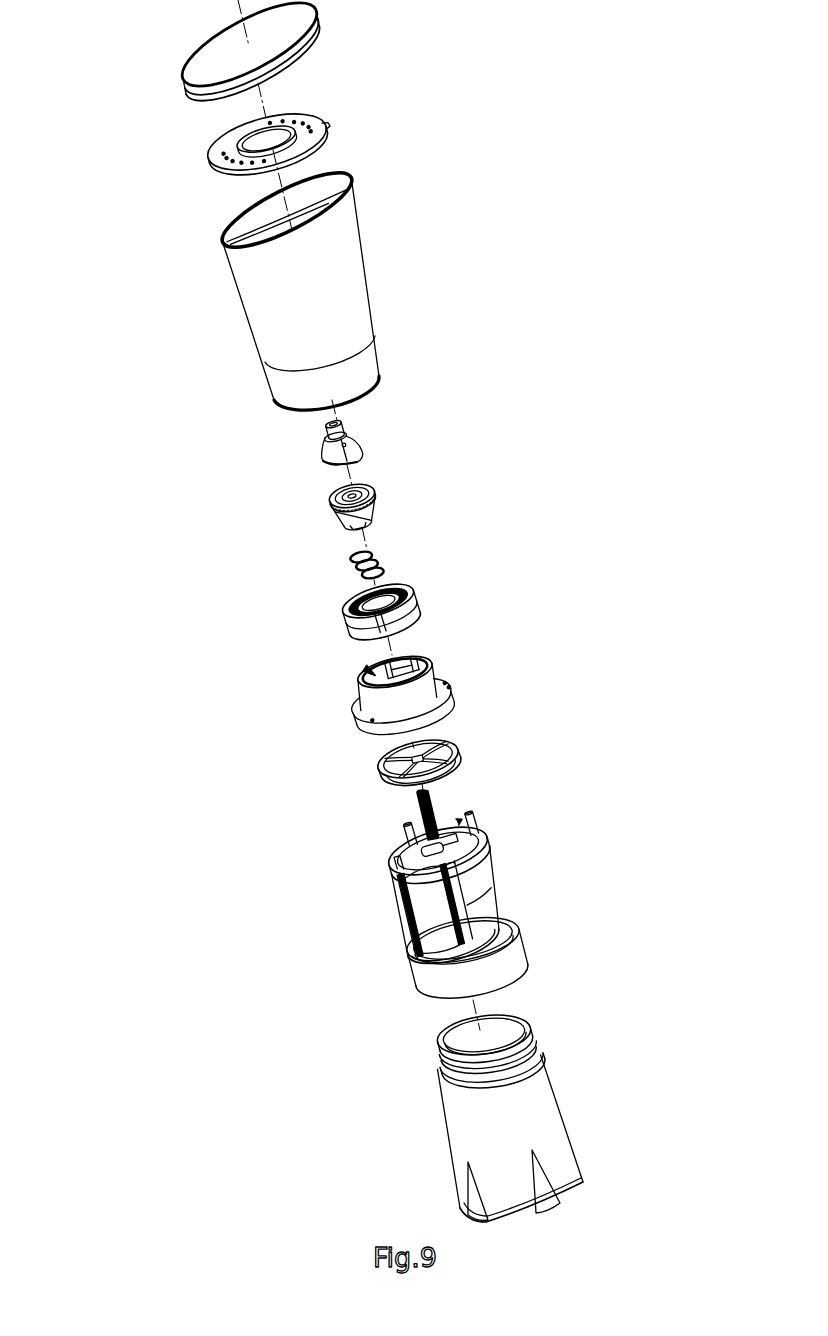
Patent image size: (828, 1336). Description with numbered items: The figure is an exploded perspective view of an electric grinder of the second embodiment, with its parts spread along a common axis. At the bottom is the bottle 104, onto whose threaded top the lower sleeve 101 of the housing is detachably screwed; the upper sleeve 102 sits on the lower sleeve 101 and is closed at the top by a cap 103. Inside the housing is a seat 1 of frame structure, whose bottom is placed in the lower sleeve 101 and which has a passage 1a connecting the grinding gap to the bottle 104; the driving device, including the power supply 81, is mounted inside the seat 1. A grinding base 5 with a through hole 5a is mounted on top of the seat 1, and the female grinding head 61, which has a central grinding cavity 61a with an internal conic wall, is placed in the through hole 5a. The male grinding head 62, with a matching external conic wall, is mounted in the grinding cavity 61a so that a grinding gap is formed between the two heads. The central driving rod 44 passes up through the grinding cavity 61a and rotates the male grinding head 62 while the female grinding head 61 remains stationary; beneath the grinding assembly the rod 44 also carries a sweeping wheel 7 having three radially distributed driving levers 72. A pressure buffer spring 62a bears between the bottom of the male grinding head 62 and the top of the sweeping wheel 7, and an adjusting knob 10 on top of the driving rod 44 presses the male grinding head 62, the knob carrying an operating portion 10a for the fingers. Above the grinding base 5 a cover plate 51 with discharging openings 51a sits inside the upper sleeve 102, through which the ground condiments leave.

The cap 103 is at (181, 73).
The cover plate 51 is at (277, 144).
The discharging openings 51a is at (225, 147).
The upper sleeve 102 is at (342, 298).
The adjusting knob 10 is at (349, 439).
The operating portion 10a is at (334, 437).
The male grinding head 62 is at (333, 502).
The pressure buffer spring 62a is at (382, 562).
The female grinding head 61 is at (393, 609).
The grinding cavity 61a is at (354, 597).
The grinding base 5 is at (411, 693).
The through hole 5a is at (365, 670).
The sweeping wheel 7 is at (423, 760).
The driving levers 72 is at (382, 768).
The central driving rod 44 is at (416, 828).
The seat 1 is at (451, 877).
The passage 1a is at (470, 828).
The power supply 81 is at (430, 920).
The lower sleeve 101 is at (517, 970).
The bottle 104 is at (538, 1110).